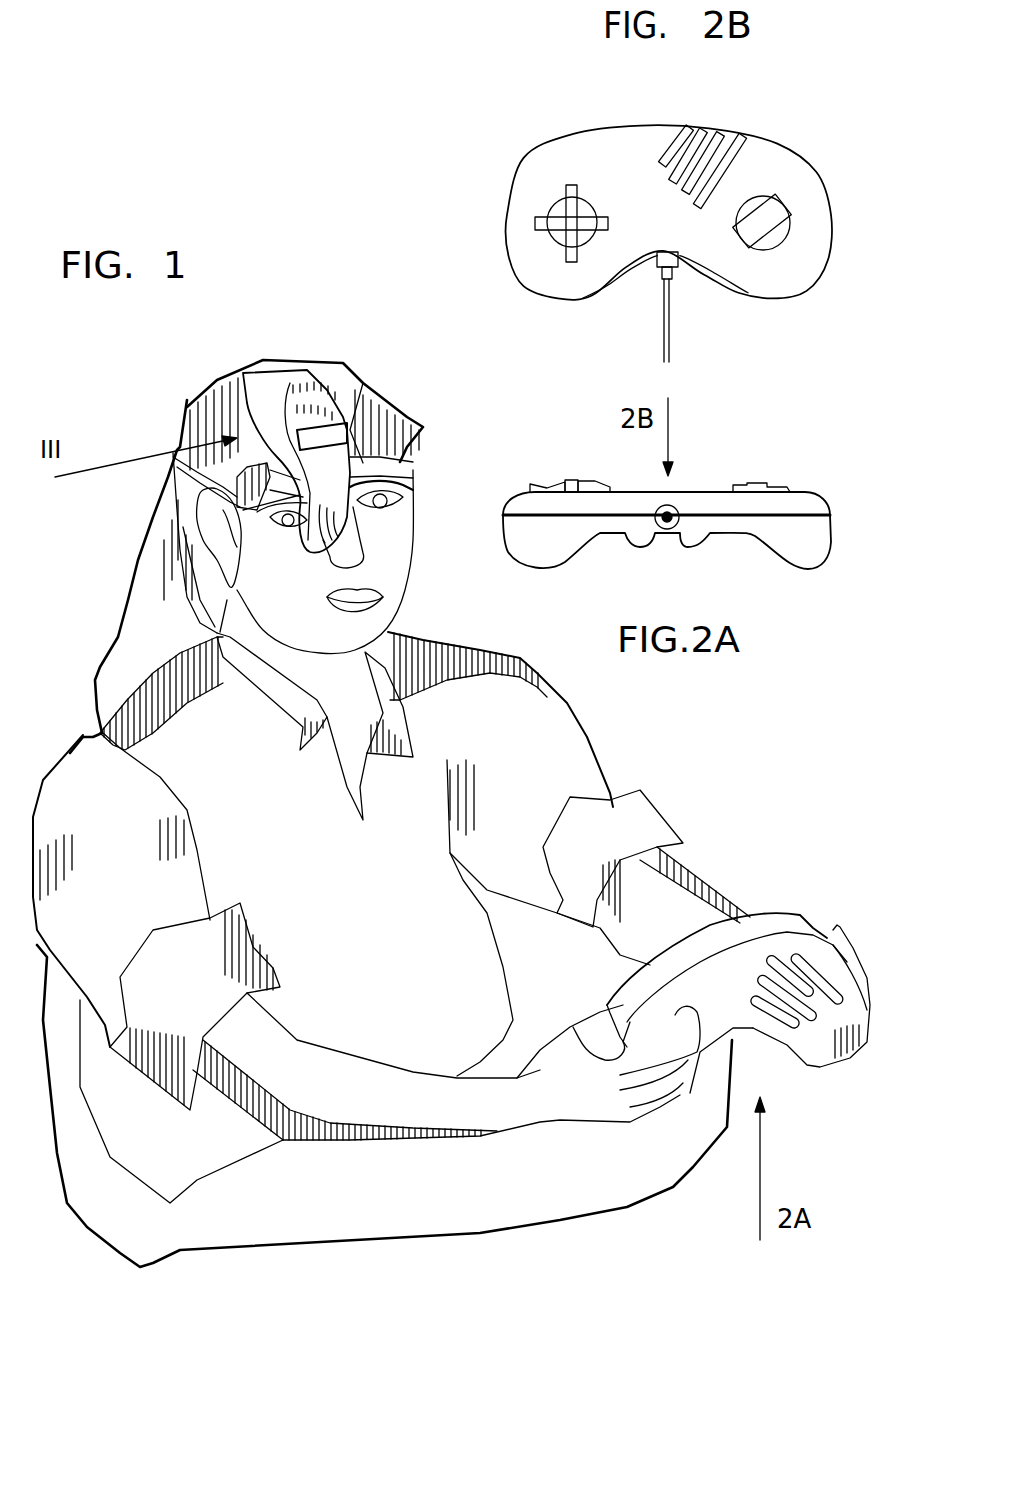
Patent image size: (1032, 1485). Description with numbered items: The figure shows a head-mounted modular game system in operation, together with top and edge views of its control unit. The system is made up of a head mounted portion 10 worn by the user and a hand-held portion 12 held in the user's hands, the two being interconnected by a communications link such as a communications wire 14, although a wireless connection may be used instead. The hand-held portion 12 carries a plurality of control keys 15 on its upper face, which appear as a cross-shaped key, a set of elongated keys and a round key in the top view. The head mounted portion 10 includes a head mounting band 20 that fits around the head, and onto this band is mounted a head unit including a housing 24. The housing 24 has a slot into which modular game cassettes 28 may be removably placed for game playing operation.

In FIG. 1, the head mounted portion 10 is at (303, 378).
In FIG. 1, the hand-held portion 12 is at (803, 907).
In FIG. 2B, the hand-held portion 12 is at (547, 140).
In FIG. 2A, the hand-held portion 12 is at (810, 475).
In FIG. 1, the communications wire 14 is at (612, 1212).
In FIG. 2B, the control keys 15 is at (572, 218).
In FIG. 1, the head mounting band 20 is at (173, 465).
In FIG. 1, the housing 24 is at (330, 463).
In FIG. 1, the modular game cassettes 28 is at (343, 415).